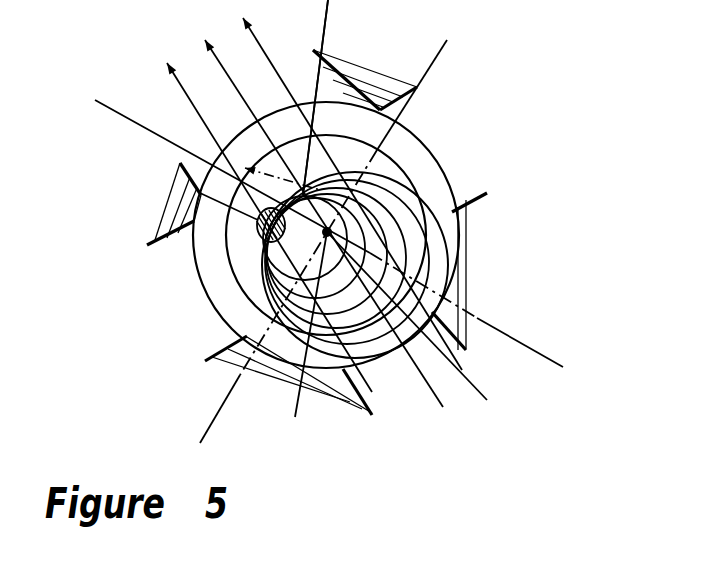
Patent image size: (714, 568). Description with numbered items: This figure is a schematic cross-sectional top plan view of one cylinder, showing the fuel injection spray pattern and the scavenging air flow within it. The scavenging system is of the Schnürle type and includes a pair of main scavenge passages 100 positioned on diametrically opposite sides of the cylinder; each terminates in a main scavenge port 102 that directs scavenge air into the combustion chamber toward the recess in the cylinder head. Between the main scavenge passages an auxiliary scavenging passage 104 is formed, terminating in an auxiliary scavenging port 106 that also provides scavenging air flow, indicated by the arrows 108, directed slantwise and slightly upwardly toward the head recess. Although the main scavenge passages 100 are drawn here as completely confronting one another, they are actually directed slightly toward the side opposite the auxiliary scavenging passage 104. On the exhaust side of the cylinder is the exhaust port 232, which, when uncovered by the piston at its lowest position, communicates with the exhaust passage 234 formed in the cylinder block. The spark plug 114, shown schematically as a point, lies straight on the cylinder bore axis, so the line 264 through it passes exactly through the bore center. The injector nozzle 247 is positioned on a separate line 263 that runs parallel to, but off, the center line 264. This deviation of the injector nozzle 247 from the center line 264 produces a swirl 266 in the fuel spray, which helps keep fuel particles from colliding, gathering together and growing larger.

The main scavenge passage 100 is at (468, 182).
The main scavenge port 102 is at (402, 108).
The auxiliary scavenging passage 104 is at (392, 398).
The auxiliary scavenging port 106 is at (460, 343).
The scavenging air flow 108 is at (443, 407).
The spark plug 114 is at (295, 341).
The exhaust port 232 is at (335, 95).
The exhaust passage 234 is at (308, 82).
The injector nozzle 247 is at (258, 221).
The line 263 is at (405, 316).
The center line 264 is at (150, 131).
The swirl 266 is at (327, 23).